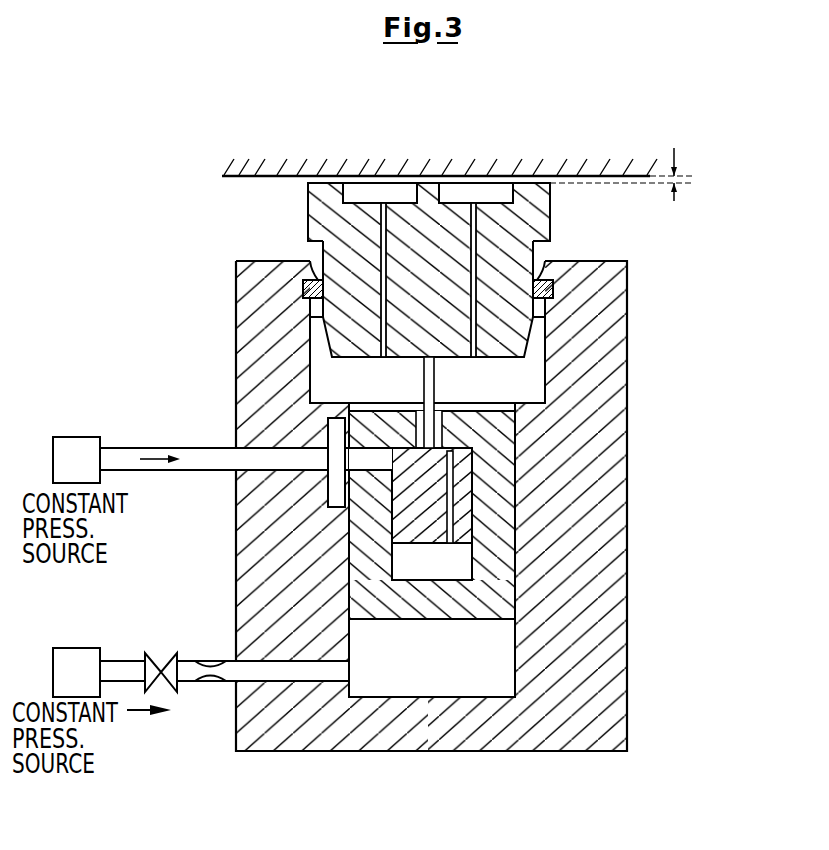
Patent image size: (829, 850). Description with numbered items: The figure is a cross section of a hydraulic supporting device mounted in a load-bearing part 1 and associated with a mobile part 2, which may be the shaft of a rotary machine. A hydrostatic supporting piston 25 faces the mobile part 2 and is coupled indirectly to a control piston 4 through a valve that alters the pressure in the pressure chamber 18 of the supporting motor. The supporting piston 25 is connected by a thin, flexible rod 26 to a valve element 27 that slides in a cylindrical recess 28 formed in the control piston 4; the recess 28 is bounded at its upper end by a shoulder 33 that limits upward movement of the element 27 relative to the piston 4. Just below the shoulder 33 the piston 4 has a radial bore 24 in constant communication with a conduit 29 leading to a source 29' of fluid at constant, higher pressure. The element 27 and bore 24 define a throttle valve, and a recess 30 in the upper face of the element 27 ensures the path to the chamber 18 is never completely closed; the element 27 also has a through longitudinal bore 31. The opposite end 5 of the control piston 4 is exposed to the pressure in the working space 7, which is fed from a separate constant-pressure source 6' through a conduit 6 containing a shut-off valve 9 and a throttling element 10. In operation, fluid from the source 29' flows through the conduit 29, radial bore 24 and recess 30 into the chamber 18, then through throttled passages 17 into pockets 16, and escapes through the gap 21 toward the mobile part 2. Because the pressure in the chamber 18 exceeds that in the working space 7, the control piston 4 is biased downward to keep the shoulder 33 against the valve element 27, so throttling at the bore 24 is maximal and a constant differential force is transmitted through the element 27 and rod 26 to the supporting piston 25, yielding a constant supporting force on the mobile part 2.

The load-bearing part 1 is at (612, 542).
The mobile part 2 is at (268, 174).
The control piston 4 is at (511, 577).
The opposite end of piston 5 is at (450, 620).
The conduit 6 is at (263, 701).
The source of hydraulic fluid 6' is at (76, 657).
The working space 7 is at (443, 680).
The shut-off valve 9 is at (154, 661).
The throttling element 10 is at (209, 662).
The pockets 16 is at (453, 196).
The throttled passages 17 is at (382, 210).
The pressure chamber 18 is at (519, 394).
The gap 21 is at (683, 178).
The radial bore 24 is at (360, 458).
The supporting piston 25 is at (538, 231).
The rod 26 is at (424, 380).
The valve element 27 is at (427, 519).
The cylindrical recess 28 is at (508, 596).
The conduit 29 is at (246, 441).
The source of hydraulic fluid 29' is at (88, 440).
The recess 30 is at (463, 450).
The longitudinal bore 31 is at (448, 493).
The shoulder 33 is at (464, 418).